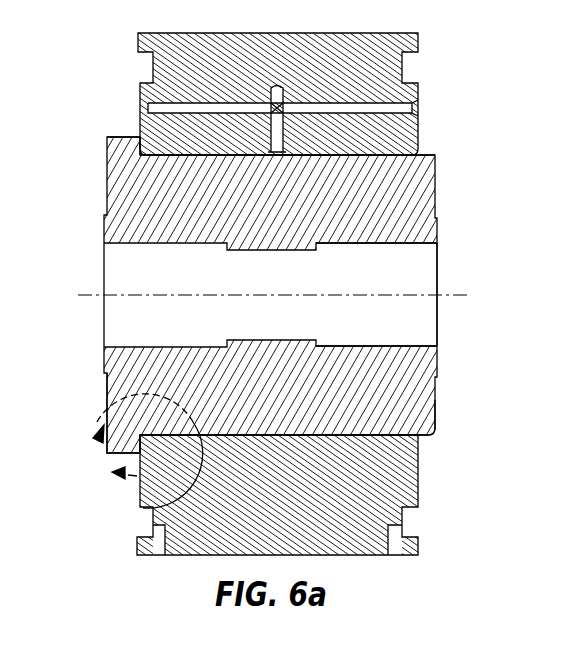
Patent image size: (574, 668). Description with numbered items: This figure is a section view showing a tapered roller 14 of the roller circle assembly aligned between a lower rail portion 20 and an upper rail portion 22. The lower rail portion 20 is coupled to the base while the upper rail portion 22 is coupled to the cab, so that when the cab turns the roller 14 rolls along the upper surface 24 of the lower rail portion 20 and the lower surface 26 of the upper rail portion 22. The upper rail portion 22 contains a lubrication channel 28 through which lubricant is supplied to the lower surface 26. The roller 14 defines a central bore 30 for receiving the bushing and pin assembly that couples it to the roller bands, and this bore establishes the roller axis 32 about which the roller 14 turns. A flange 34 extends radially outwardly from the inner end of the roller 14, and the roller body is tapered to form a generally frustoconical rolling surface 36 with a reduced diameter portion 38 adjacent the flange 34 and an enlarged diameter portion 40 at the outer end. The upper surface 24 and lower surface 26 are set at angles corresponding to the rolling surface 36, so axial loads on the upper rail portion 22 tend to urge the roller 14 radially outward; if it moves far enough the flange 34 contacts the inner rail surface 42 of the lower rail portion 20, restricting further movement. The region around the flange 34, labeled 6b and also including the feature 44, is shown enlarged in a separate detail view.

The tapered roller 14 is at (405, 200).
The lower rail portion 20 is at (378, 545).
The upper rail portion 22 is at (342, 60).
The upper surface 24 is at (349, 433).
The lower surface 26 is at (358, 156).
The lubrication channel 28 is at (270, 133).
The central bore 30 is at (405, 245).
The roller axis 32 is at (428, 303).
The flange 34 is at (125, 141).
The frustoconical rolling surface 36 is at (375, 436).
The reduced diameter portion 38 is at (143, 508).
The enlarged diameter portion 40 is at (431, 429).
The inner rail surface 42 is at (141, 457).
The lower flange 44 is at (107, 392).
The detail view indicator 6b is at (102, 461).